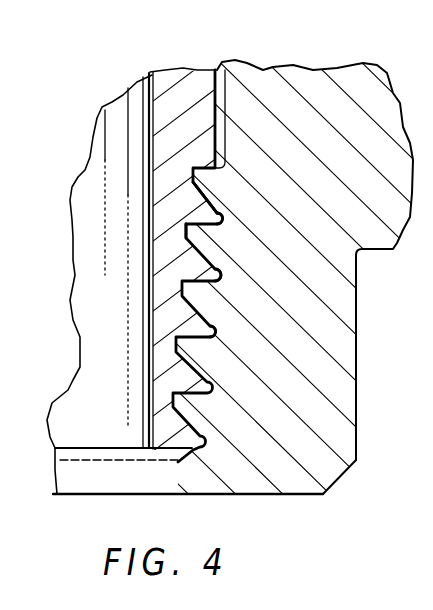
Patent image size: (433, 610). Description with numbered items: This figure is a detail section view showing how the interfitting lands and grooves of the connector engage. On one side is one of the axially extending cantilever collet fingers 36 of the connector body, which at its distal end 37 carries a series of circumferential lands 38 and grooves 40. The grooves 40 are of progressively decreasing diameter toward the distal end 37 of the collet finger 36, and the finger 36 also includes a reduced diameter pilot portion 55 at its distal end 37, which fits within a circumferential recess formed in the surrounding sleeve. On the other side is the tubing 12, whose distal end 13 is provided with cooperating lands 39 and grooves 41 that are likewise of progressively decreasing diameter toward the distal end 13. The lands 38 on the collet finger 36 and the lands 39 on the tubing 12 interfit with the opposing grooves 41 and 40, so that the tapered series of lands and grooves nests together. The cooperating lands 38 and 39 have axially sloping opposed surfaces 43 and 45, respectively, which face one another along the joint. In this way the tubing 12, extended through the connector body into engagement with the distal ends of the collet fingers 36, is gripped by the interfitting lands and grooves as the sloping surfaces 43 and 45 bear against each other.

The tubing 12 is at (193, 68).
The distal end of the tubing 13 is at (168, 456).
The collet fingers 36 is at (292, 66).
The distal end of the collet fingers 37 is at (233, 494).
The lands 38 is at (195, 172).
The lands 39 is at (218, 226).
The grooves 40 is at (216, 218).
The grooves 41 is at (190, 243).
The axially sloping opposed surface 43 is at (207, 193).
The axially sloping opposed surface 45 is at (205, 193).
The reduced diameter pilot portion 55 is at (357, 370).